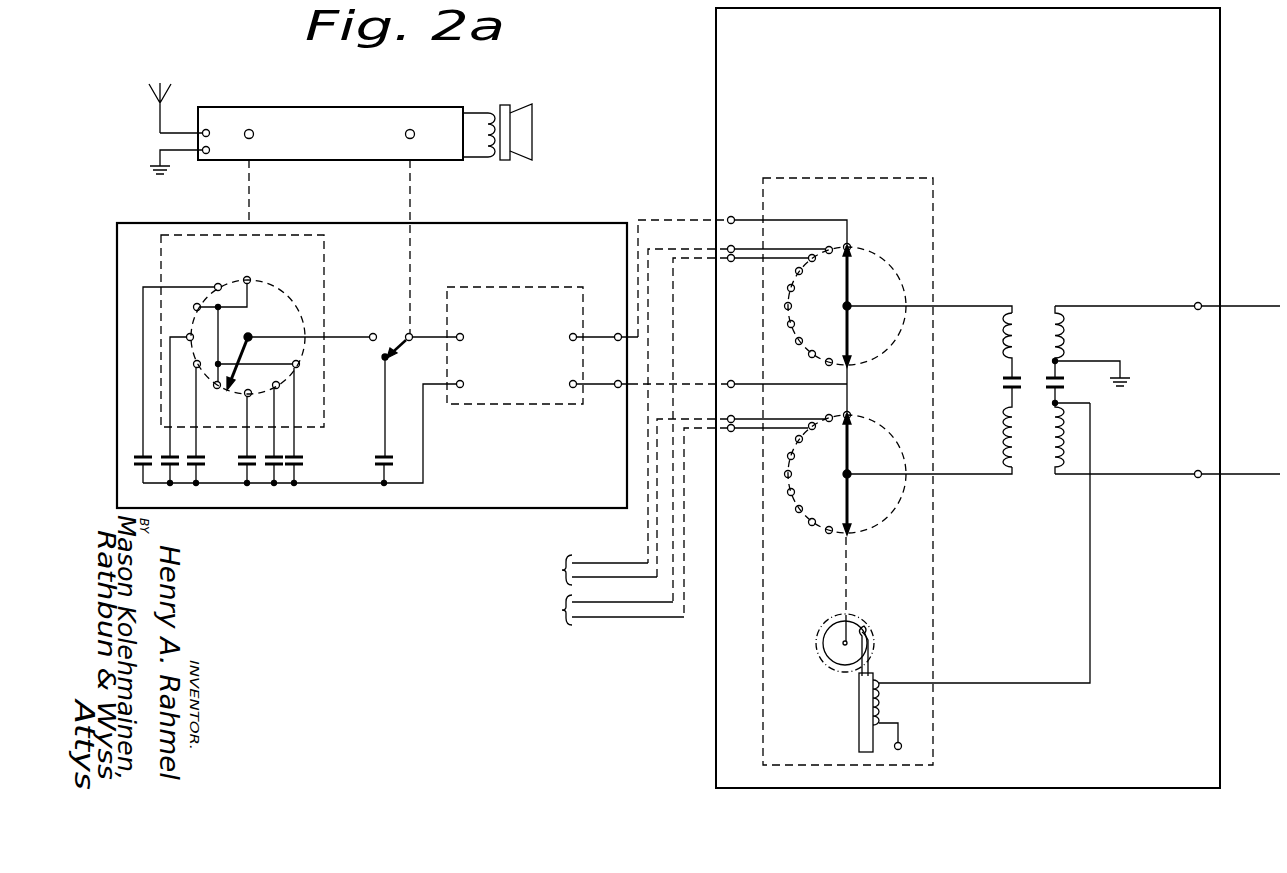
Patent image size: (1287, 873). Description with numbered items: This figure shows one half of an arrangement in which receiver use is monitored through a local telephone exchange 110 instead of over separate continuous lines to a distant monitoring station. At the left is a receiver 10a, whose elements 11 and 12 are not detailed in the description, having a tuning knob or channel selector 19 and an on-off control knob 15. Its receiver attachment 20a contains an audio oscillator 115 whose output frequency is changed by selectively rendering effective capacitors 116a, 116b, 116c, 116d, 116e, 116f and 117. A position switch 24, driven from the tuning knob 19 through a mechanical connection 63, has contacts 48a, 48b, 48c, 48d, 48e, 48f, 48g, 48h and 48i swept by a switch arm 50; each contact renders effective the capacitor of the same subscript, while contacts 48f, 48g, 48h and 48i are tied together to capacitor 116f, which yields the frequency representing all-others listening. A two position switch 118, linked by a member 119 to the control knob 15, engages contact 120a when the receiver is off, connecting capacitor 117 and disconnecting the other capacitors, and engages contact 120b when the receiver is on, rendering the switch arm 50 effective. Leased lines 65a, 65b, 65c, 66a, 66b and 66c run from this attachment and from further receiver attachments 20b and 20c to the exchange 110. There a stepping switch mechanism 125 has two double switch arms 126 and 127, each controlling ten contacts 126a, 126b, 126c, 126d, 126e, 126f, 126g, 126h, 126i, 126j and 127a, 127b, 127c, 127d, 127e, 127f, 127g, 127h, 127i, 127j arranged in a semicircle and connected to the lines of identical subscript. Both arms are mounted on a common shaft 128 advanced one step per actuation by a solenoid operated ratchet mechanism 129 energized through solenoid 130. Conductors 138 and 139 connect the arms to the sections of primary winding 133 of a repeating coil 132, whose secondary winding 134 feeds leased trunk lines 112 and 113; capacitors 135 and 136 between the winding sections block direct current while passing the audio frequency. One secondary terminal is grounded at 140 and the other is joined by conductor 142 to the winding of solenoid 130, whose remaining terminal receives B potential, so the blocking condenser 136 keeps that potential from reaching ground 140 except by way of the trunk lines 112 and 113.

The receiver 10a is at (330, 120).
The antenna 11 is at (159, 128).
The loudspeaker 12 is at (520, 132).
The control knob 15 is at (425, 142).
The tuning knob 19 is at (264, 142).
The mechanical connection 63 is at (267, 191).
The member 119 is at (433, 246).
The receiver attachment 20a is at (353, 355).
The position switch 24 is at (256, 329).
The position switch contact 48a is at (182, 358).
The position switch contact 48b is at (171, 386).
The position switch contact 48c is at (172, 402).
The position switch contact 48d is at (260, 410).
The position switch contact 48e is at (304, 419).
The position switch contact 48f is at (311, 409).
The position switch contact 48g is at (247, 283).
The position switch contact 48h is at (180, 299).
The position switch contact 48i is at (245, 365).
The switch arm 50 is at (298, 361).
The contact 120a is at (363, 405).
The contact 120b is at (358, 327).
The two position switch 118 is at (421, 351).
The audio oscillator 115 is at (542, 332).
The capacitor 116a is at (110, 460).
The capacitor 116b is at (123, 454).
The capacitor 116c is at (136, 479).
The capacitor 116d is at (228, 458).
The capacitor 116e is at (302, 456).
The capacitor 116f is at (317, 471).
The capacitor 117 is at (399, 459).
The leased telephone line 65a is at (742, 268).
The leased telephone line 65b is at (698, 397).
The leased telephone line 65c is at (690, 429).
The leased telephone line 66a is at (738, 387).
The leased telephone line 66b is at (698, 487).
The leased telephone line 66c is at (690, 521).
The receiver attachment 20b is at (389, 570).
The receiver attachment 20c is at (391, 608).
The local telephone exchange 110 is at (998, 398).
The stepping switch mechanism 125 is at (825, 459).
The double switch arm 126 is at (847, 306).
The switch contact 126a is at (871, 239).
The switch contact 126b is at (816, 238).
The switch contact 126c is at (789, 245).
The switch contact 126d is at (772, 269).
The switch contact 126e is at (760, 286).
The switch contact 126f is at (757, 303).
The switch contact 126g is at (757, 320).
The switch contact 126h is at (777, 342).
The switch contact 126i is at (789, 361).
The switch contact 126j is at (804, 371).
The double switch arm 127 is at (847, 474).
The switch contact 127a is at (871, 410).
The switch contact 127b is at (813, 403).
The switch contact 127c is at (789, 414).
The switch contact 127d is at (760, 440).
The switch contact 127e is at (756, 457).
The switch contact 127f is at (754, 473).
The switch contact 127g is at (756, 490).
The switch contact 127h is at (769, 510).
The switch contact 127i is at (783, 527).
The switch contact 127j is at (807, 540).
The common shaft 128 is at (871, 589).
The solenoid operated ratchet mechanism 129 is at (860, 645).
The solenoid 130 is at (866, 717).
The repeating coil 132 is at (1023, 370).
The primary transformer winding 133 is at (982, 345).
The secondary transformer winding 134 is at (1079, 342).
The capacitor 135 is at (980, 421).
The capacitor 136 is at (1073, 421).
The conductor 138 is at (931, 298).
The conductor 139 is at (931, 482).
The ground 140 is at (1099, 361).
The conductor 142 is at (1008, 543).
The leased trunk line 112 is at (1167, 297).
The leased trunk line 113 is at (1167, 466).